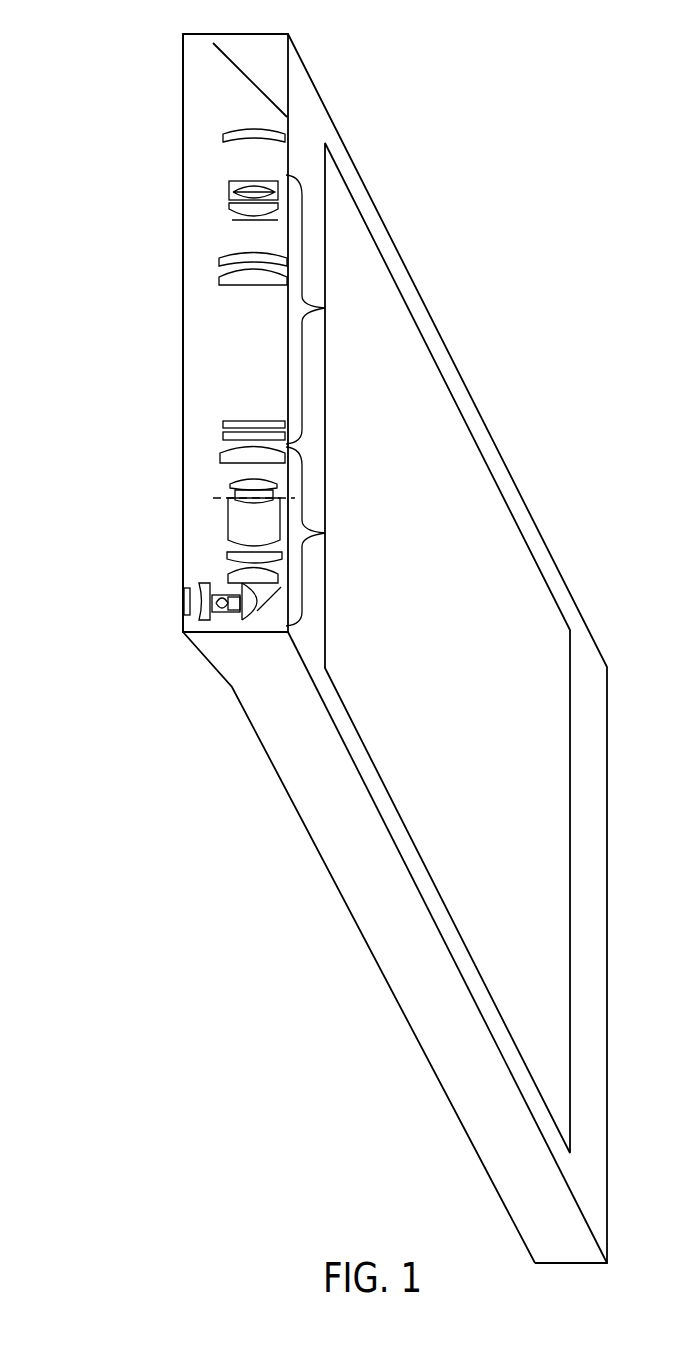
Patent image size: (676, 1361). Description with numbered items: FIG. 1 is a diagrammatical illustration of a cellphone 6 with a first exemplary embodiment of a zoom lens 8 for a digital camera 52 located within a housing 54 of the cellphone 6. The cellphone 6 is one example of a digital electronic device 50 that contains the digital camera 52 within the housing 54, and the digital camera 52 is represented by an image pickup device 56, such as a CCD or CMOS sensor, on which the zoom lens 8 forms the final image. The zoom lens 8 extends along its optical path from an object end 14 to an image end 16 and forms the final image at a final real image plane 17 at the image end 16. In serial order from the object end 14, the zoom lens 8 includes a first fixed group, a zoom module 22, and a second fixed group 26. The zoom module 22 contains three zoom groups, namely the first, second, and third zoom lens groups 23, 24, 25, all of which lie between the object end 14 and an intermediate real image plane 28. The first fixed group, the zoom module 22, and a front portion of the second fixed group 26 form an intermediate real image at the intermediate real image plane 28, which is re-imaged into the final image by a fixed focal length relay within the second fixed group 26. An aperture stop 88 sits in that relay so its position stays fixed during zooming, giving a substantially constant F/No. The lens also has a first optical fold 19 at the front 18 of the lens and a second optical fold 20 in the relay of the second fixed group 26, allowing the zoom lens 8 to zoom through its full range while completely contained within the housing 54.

The cellphone 6 is at (183, 336).
The zoom lens 8 is at (187, 249).
The object end 14 is at (183, 85).
The image end 16 is at (183, 615).
The final real image plane 17 is at (185, 595).
The front of the lens 18 is at (222, 100).
The first optical fold 19 is at (240, 62).
The second optical fold 20 is at (276, 598).
The zoom module 22 is at (325, 308).
The first zoom lens group 23 is at (225, 175).
The second zoom lens group 24 is at (225, 243).
The third zoom lens group 25 is at (225, 413).
The second fixed group 26 is at (325, 533).
The intermediate real image plane 28 is at (210, 497).
The digital electronic device 50 is at (183, 602).
The digital camera 52 is at (176, 606).
The housing 54 is at (232, 688).
The image pickup device 56 is at (203, 613).
The aperture stop 88 is at (250, 605).